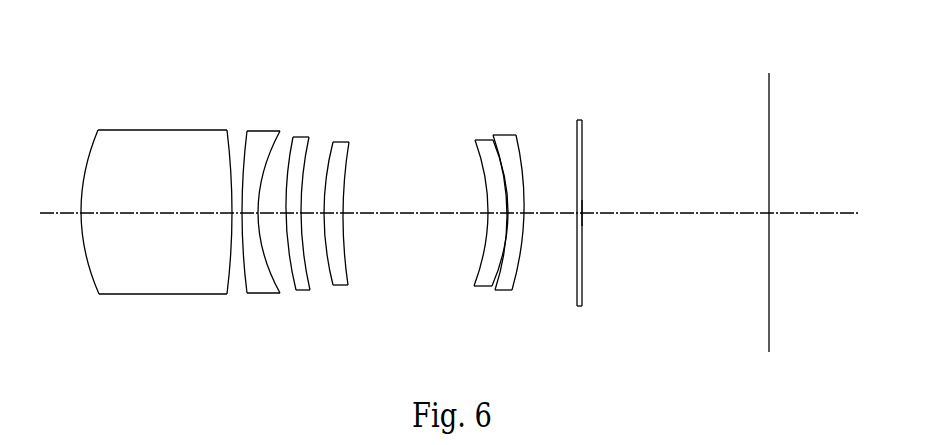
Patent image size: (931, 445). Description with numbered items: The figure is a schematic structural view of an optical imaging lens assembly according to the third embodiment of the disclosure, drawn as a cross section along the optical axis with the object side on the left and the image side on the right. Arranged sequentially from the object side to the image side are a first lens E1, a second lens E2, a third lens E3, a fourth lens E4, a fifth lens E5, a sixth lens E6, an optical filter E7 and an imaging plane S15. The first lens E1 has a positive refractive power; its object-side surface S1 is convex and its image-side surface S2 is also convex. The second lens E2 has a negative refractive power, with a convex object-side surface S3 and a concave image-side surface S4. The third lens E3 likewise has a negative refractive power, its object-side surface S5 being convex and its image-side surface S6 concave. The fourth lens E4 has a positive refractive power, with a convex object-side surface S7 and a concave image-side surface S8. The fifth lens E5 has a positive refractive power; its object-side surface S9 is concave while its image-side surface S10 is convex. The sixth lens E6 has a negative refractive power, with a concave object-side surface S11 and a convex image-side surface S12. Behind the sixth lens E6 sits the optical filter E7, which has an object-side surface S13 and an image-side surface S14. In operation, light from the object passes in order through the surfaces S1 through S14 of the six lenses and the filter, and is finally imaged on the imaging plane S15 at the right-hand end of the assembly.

The first lens E1 is at (125, 202).
The second lens E2 is at (229, 202).
The third lens E3 is at (282, 202).
The fourth lens E4 is at (345, 202).
The fifth lens E5 is at (479, 202).
The sixth lens E6 is at (519, 202).
The optical filter E7 is at (628, 202).
The object-side surface of the first lens S1 is at (81, 213).
The image-side surface of the first lens S2 is at (232, 213).
The object-side surface of the second lens S3 is at (243, 213).
The image-side surface of the second lens S4 is at (258, 213).
The object-side surface of the third lens S5 is at (286, 213).
The image-side surface of the third lens S6 is at (301, 213).
The object-side surface of the fourth lens S7 is at (325, 213).
The image-side surface of the fourth lens S8 is at (343, 213).
The object-side surface of the fifth lens S9 is at (488, 213).
The image-side surface of the fifth lens S10 is at (508, 213).
The object-side surface of the sixth lens S11 is at (523, 213).
The image-side surface of the sixth lens S12 is at (578, 215).
The object-side surface of the optical filter S13 is at (580, 213).
The image-side surface of the optical filter S14 is at (583, 213).
The imaging plane S15 is at (769, 213).